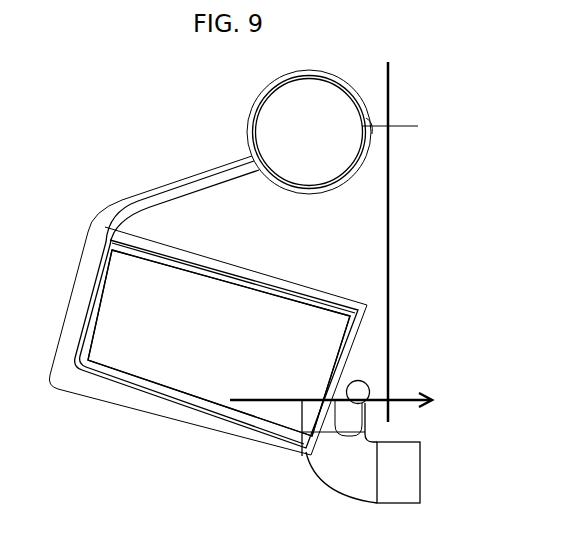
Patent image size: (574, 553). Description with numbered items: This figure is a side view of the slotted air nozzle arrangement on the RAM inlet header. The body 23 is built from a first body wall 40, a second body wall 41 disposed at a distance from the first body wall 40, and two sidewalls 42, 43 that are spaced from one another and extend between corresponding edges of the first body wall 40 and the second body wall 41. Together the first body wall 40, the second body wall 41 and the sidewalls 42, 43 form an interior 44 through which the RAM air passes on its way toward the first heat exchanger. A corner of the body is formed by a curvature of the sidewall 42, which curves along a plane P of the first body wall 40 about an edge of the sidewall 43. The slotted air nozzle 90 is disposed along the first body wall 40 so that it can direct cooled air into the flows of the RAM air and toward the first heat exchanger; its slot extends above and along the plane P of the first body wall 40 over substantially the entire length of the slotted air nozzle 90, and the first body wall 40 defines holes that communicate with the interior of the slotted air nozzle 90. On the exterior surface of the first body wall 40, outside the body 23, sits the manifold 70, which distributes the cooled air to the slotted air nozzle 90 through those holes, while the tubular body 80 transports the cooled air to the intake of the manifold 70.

The body 23 is at (307, 137).
The first body wall 40 is at (257, 400).
The second body wall 41 is at (373, 137).
The sidewall 42 is at (222, 330).
The sidewall 43 is at (207, 289).
The interior 44 is at (330, 247).
The manifold 70 is at (340, 413).
The tubular body 80 is at (418, 465).
The slotted air nozzle 90 is at (367, 383).
The plane of the first body wall P is at (398, 397).